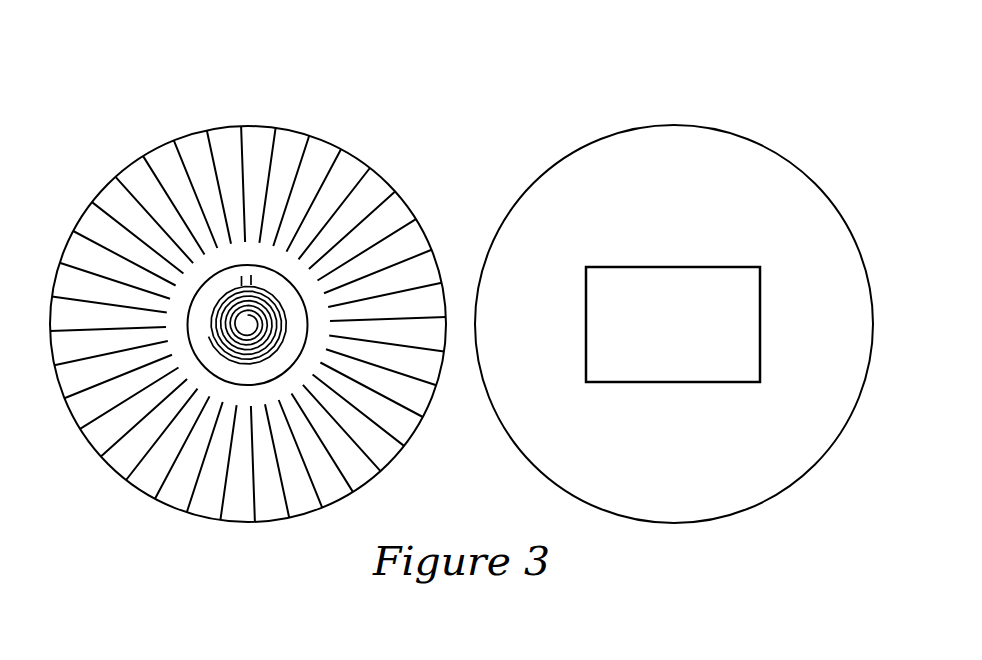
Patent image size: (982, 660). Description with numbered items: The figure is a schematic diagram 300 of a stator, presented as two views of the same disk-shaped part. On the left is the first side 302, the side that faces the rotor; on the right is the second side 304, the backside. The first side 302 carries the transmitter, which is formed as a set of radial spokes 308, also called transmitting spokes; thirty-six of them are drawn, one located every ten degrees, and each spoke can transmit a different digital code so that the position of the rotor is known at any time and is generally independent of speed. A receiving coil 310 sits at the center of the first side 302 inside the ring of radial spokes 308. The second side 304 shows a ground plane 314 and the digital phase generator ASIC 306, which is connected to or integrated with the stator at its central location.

The schematic diagram 300 is at (148, 61).
The first side 302 is at (131, 137).
The second side 304 is at (560, 137).
The digital phase generator ASIC 306 is at (668, 267).
The radial spokes 308 is at (357, 187).
The receiving coil 310 is at (262, 282).
The ground plane 314 is at (770, 175).